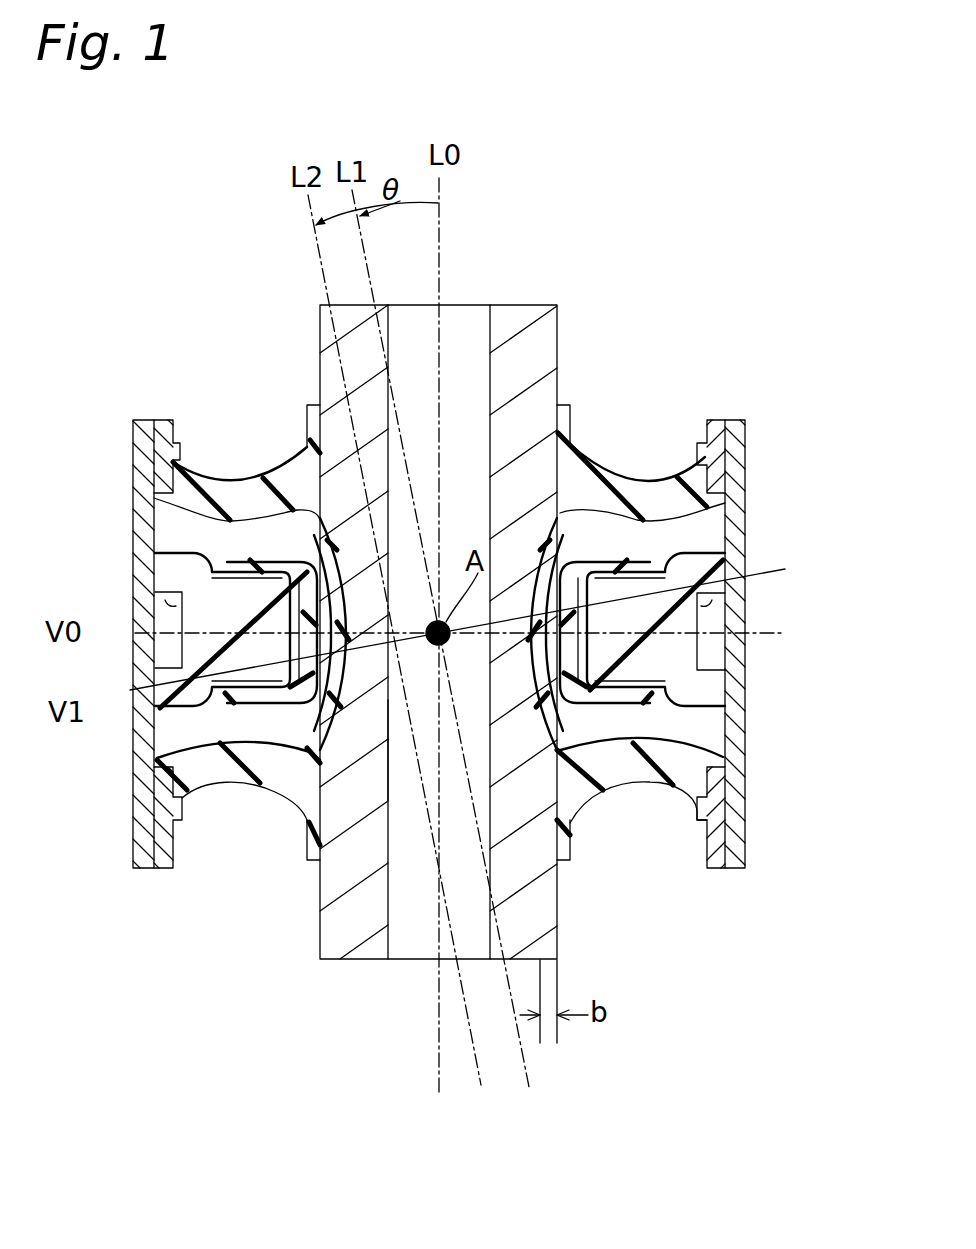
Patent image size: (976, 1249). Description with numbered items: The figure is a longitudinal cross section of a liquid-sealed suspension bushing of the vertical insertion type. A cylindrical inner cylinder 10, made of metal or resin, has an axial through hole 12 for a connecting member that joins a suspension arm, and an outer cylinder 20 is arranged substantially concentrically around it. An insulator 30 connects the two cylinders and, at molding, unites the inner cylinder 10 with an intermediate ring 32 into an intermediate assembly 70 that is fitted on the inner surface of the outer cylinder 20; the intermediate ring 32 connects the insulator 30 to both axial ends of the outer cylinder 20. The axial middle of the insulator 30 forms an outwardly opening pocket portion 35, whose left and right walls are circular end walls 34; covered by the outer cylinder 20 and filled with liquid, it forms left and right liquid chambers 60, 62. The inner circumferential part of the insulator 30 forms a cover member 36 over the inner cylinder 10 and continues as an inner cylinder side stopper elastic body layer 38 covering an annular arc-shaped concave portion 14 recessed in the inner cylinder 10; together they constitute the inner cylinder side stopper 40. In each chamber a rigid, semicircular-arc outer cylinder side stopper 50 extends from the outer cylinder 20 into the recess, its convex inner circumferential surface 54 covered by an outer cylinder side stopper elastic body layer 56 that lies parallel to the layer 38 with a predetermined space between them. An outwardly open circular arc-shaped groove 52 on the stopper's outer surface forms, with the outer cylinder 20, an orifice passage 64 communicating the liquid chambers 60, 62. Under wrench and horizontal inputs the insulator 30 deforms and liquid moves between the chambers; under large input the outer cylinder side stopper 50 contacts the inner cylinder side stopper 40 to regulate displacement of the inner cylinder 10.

The inner cylinder 10 is at (530, 305).
The through hole 12 is at (476, 312).
The concave portion 14 is at (340, 720).
The outer cylinder 20 is at (103, 602).
The insulator 30 is at (237, 414).
The intermediate ring 32 is at (163, 420).
The end wall 34 is at (242, 480).
The pocket portion 35 is at (157, 762).
The cover member 36 is at (292, 447).
The inner cylinder side stopper elastic body layer 38 is at (337, 590).
The inner cylinder side stopper 40 is at (300, 720).
The outer cylinder side stopper 50 is at (212, 598).
The circular arc-shaped groove 52 is at (168, 600).
The inner circumferential surface 54 is at (235, 690).
The outer cylinder side stopper elastic body layer 56 is at (338, 622).
The liquid chamber 60 is at (245, 530).
The liquid chamber 62 is at (677, 530).
The orifice passage 64 is at (155, 648).
The intermediate assembly 70 is at (598, 305).